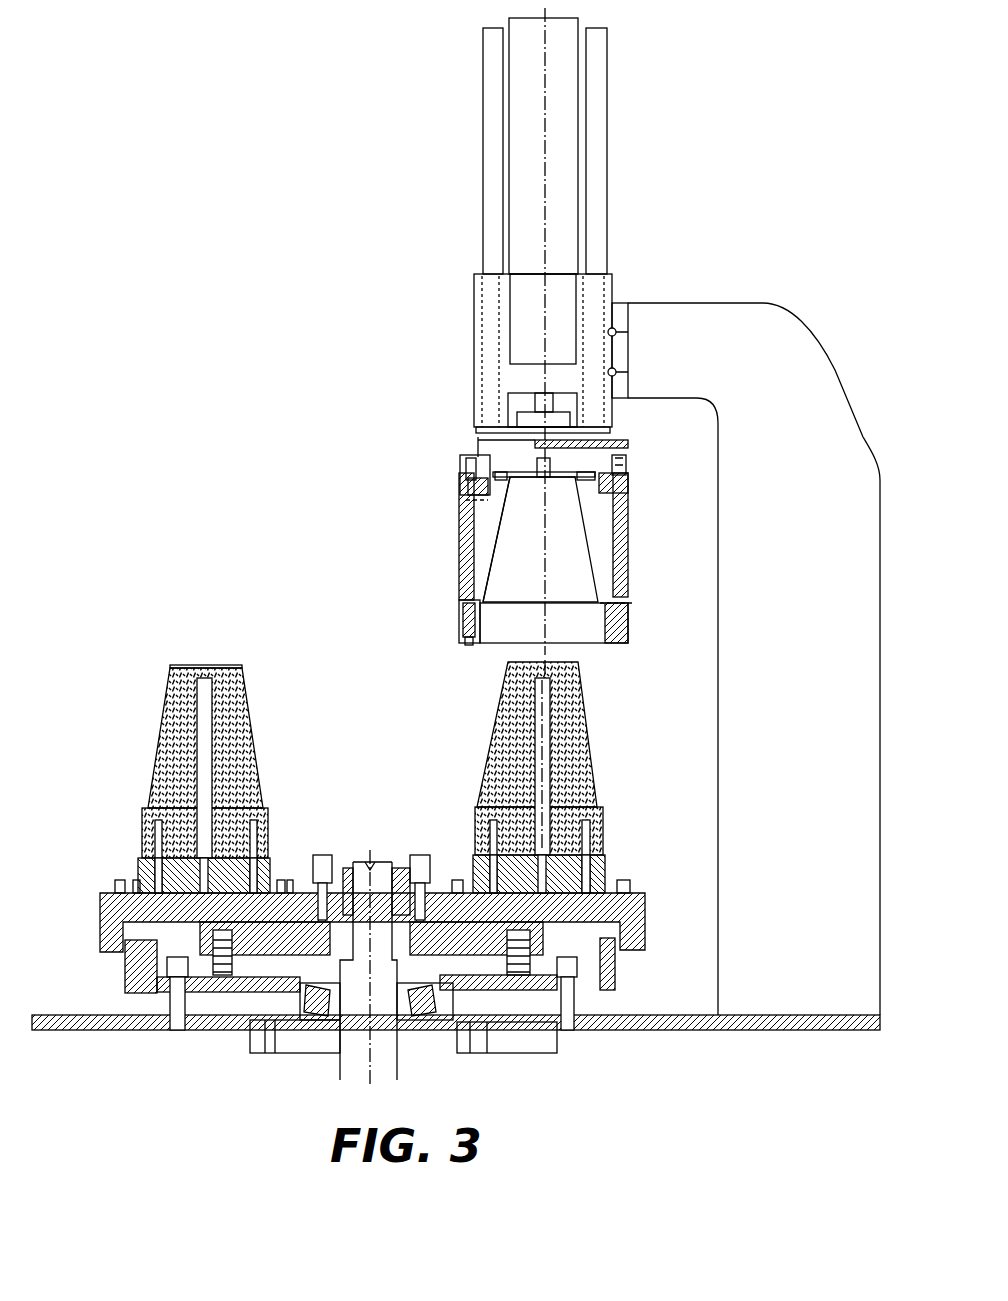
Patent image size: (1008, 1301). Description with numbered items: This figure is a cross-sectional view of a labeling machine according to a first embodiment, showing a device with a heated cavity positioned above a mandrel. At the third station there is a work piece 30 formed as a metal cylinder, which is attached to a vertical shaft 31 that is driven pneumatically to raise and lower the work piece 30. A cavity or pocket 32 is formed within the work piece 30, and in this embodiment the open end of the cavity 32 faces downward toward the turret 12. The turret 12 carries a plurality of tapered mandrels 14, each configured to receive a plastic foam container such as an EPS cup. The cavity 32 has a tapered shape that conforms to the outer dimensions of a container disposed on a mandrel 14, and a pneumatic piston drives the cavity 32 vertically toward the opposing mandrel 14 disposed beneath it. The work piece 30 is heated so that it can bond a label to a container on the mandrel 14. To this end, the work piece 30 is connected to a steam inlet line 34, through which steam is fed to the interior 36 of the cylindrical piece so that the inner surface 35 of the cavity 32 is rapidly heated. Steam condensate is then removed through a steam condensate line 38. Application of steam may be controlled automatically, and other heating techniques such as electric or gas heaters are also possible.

The turret 12 is at (645, 905).
The mandrel 14 is at (240, 718).
The work piece 30 is at (474, 355).
The vertical shaft 31 is at (595, 243).
The cavity 32 is at (459, 563).
The steam inlet line 34 is at (459, 500).
The inner surface 35 is at (588, 540).
The interior 36 is at (488, 568).
The steam condensate line 38 is at (630, 612).